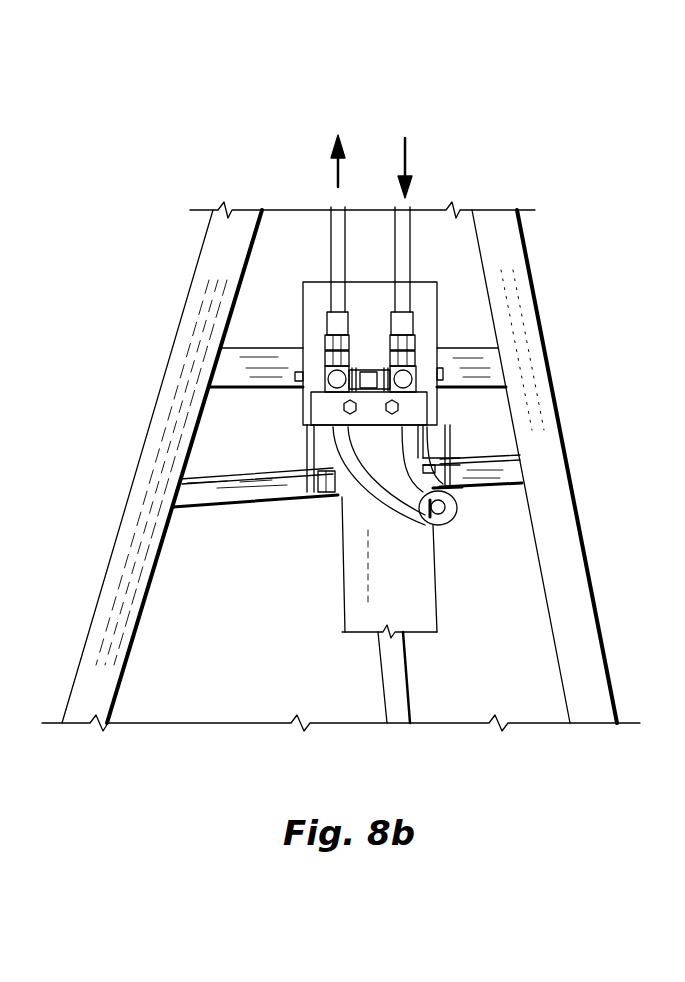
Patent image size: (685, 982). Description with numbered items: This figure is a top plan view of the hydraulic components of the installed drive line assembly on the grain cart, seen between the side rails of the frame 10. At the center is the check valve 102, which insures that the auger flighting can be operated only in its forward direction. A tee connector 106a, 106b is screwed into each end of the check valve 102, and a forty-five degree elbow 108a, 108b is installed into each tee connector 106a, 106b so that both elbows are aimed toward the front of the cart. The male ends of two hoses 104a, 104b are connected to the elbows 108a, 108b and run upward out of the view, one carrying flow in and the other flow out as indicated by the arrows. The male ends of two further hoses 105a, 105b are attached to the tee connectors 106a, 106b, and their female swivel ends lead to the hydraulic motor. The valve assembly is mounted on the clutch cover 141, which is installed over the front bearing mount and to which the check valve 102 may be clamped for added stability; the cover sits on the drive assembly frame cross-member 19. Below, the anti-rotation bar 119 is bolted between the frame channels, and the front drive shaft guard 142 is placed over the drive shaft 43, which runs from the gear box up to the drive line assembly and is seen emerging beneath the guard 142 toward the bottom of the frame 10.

The frame 10 is at (220, 253).
The drive assembly frame cross-member 19 is at (262, 348).
The drive shaft 43 is at (400, 688).
The check valve 102 is at (368, 370).
The hose 104a is at (333, 237).
The hose 104b is at (403, 235).
The hose 105a is at (345, 443).
The hose 105b is at (413, 437).
The tee connector 106a is at (327, 387).
The tee connector 106b is at (427, 393).
The 45° elbow 108a is at (325, 355).
The 45° elbow 108b is at (413, 338).
The anti-rotation bar 119 is at (233, 500).
The clutch cover 141 is at (425, 297).
The front drive shaft guard 142 is at (345, 600).